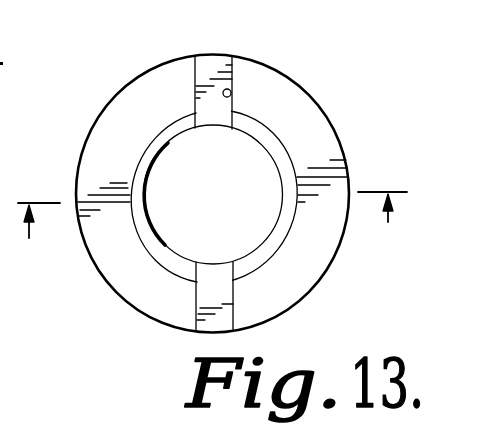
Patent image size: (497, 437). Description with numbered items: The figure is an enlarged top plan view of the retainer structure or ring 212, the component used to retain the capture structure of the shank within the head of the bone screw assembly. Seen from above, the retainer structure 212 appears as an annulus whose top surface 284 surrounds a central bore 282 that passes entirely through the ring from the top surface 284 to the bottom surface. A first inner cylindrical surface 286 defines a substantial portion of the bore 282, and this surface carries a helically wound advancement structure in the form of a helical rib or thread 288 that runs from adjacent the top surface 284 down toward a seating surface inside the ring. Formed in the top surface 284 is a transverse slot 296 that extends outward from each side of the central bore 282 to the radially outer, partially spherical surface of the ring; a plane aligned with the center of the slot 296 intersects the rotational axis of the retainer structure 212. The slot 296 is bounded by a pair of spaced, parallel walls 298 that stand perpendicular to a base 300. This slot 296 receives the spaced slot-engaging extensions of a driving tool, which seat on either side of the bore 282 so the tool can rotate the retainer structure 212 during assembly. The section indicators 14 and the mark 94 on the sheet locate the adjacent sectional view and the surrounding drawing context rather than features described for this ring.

The section line 14- 14 is at (213, 235).
The housing 94 is at (149, 70).
The retainer structure 212 is at (325, 275).
The central bore 282 is at (203, 196).
The top surface 284 is at (130, 142).
The first inner cylindrical surface 286 is at (262, 150).
The helical rib or thread 288 is at (277, 224).
The transverse slot 296 is at (213, 63).
The spaced, parallel walls 298 is at (236, 93).
The base 300 is at (222, 291).